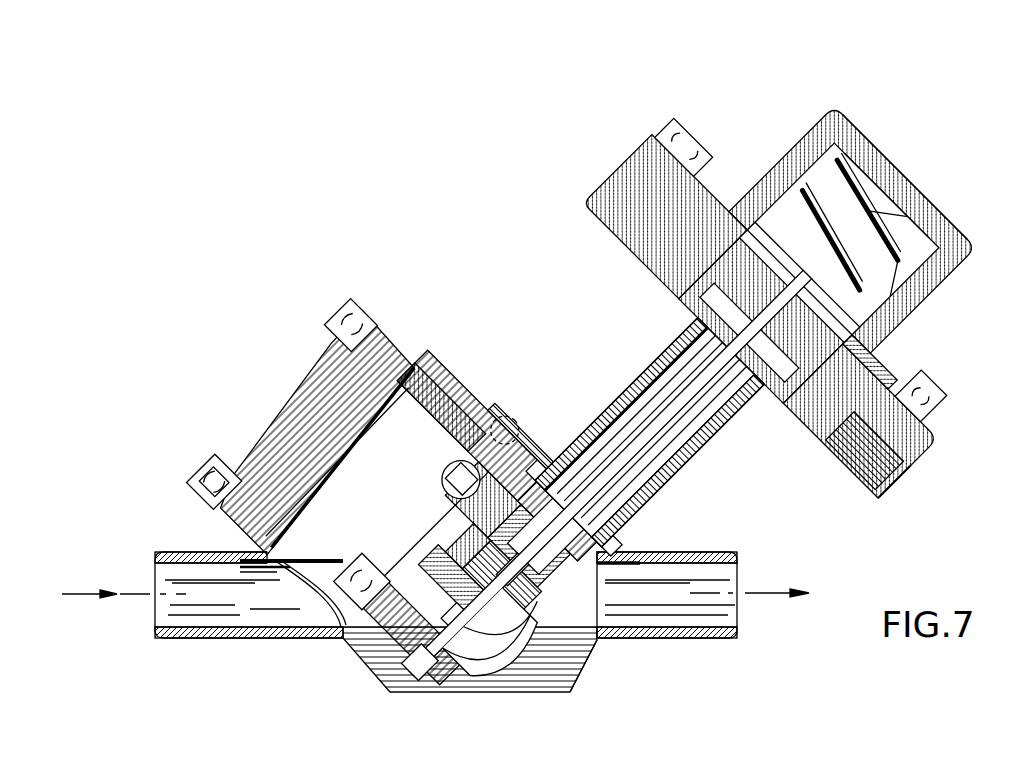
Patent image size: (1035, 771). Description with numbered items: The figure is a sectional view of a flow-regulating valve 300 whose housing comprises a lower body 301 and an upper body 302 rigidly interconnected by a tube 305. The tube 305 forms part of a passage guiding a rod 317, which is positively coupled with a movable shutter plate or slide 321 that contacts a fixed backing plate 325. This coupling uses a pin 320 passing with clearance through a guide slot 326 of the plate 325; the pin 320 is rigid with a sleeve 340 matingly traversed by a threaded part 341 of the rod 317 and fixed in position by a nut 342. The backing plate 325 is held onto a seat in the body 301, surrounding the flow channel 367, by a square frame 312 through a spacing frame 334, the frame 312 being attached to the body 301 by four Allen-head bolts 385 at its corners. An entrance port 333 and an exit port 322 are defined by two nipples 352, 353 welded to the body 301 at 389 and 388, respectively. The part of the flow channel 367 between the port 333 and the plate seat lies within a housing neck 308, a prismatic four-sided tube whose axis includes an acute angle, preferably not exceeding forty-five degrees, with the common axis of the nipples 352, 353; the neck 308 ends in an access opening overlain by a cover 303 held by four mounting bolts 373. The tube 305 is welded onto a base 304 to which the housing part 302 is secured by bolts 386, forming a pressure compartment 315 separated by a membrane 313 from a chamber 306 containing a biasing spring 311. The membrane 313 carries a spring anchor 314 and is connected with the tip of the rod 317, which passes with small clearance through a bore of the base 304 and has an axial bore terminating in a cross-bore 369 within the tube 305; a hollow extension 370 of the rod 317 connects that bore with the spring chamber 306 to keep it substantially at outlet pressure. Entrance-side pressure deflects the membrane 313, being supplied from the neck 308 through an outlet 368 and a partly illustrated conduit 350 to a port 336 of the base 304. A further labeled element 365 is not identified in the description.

The flow-regulating valve 300 is at (812, 85).
The lower body 301 is at (512, 680).
The upper body 302 is at (945, 418).
The cover 303 is at (207, 507).
The base 304 is at (590, 218).
The tube 305 is at (655, 380).
The spring chamber 306 is at (782, 190).
The housing neck 308 is at (428, 352).
The biasing spring 311 is at (966, 262).
The square frame 312 is at (378, 615).
The membrane 313 is at (885, 372).
The spring anchor 314 is at (870, 305).
The pressure compartment 315 is at (655, 283).
The rod 317 is at (683, 450).
The pin 320 is at (443, 548).
The shutter plate or slide 321 is at (433, 570).
The exit port 322 is at (613, 597).
The fixed backing plate 325 is at (545, 480).
The guide slot 326 is at (457, 463).
The entrance port 333 is at (297, 597).
The spacing frame 334 is at (480, 452).
The port 336 is at (895, 498).
The sleeve 340 is at (505, 648).
The threaded part 341 is at (472, 645).
The nut 342 is at (530, 640).
The conduit 350 is at (508, 452).
The nipple 352 is at (208, 642).
The nipple 353 is at (697, 640).
The lower flange 365 is at (790, 398).
The flow channel 367 is at (300, 520).
The outlet 368 is at (485, 470).
The cross-bore 369 is at (700, 415).
The hollow extension 370 is at (795, 275).
The mounting bolts 373 is at (217, 450).
The bolts 385 is at (360, 565).
The bolts 386 is at (688, 134).
The weld 388 is at (615, 642).
The weld 389 is at (262, 545).